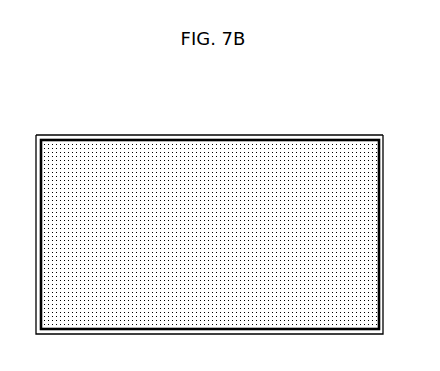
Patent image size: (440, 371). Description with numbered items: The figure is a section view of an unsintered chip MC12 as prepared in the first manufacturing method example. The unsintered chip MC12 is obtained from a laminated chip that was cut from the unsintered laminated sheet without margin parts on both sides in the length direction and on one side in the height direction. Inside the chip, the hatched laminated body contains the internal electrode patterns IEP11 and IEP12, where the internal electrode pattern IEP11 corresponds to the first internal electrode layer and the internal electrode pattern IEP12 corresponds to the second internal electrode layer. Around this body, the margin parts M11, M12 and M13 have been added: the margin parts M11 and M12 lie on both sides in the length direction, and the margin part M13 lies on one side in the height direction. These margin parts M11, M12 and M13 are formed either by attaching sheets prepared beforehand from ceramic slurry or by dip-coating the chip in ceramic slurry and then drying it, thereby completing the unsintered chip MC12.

The margin part M11 is at (36, 193).
The unsintered chip MC12 is at (97, 135).
The internal electrode pattern IEP11 is at (177, 162).
The internal electrode pattern IEP12 is at (257, 160).
The margin part M13 is at (328, 134).
The margin part M12 is at (383, 193).